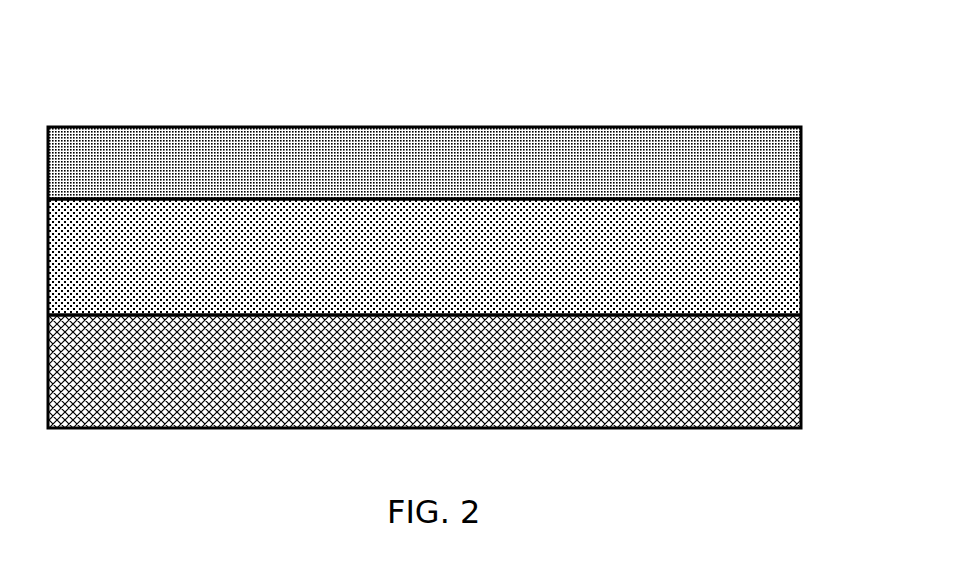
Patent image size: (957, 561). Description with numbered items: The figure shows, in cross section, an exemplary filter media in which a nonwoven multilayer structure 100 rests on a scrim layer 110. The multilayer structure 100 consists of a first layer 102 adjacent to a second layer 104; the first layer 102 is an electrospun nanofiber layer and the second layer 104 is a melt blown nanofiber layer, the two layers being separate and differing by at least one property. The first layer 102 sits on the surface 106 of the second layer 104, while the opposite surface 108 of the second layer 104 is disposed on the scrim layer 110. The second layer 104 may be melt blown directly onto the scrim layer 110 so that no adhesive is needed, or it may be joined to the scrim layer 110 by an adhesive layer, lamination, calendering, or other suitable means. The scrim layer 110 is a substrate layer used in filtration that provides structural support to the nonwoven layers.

The nonwoven multilayer structure 100 is at (219, 110).
The first layer 102 is at (534, 153).
The second layer 104 is at (750, 244).
The surface 106 is at (803, 199).
The surface 108 is at (806, 317).
The scrim layer 110 is at (609, 376).